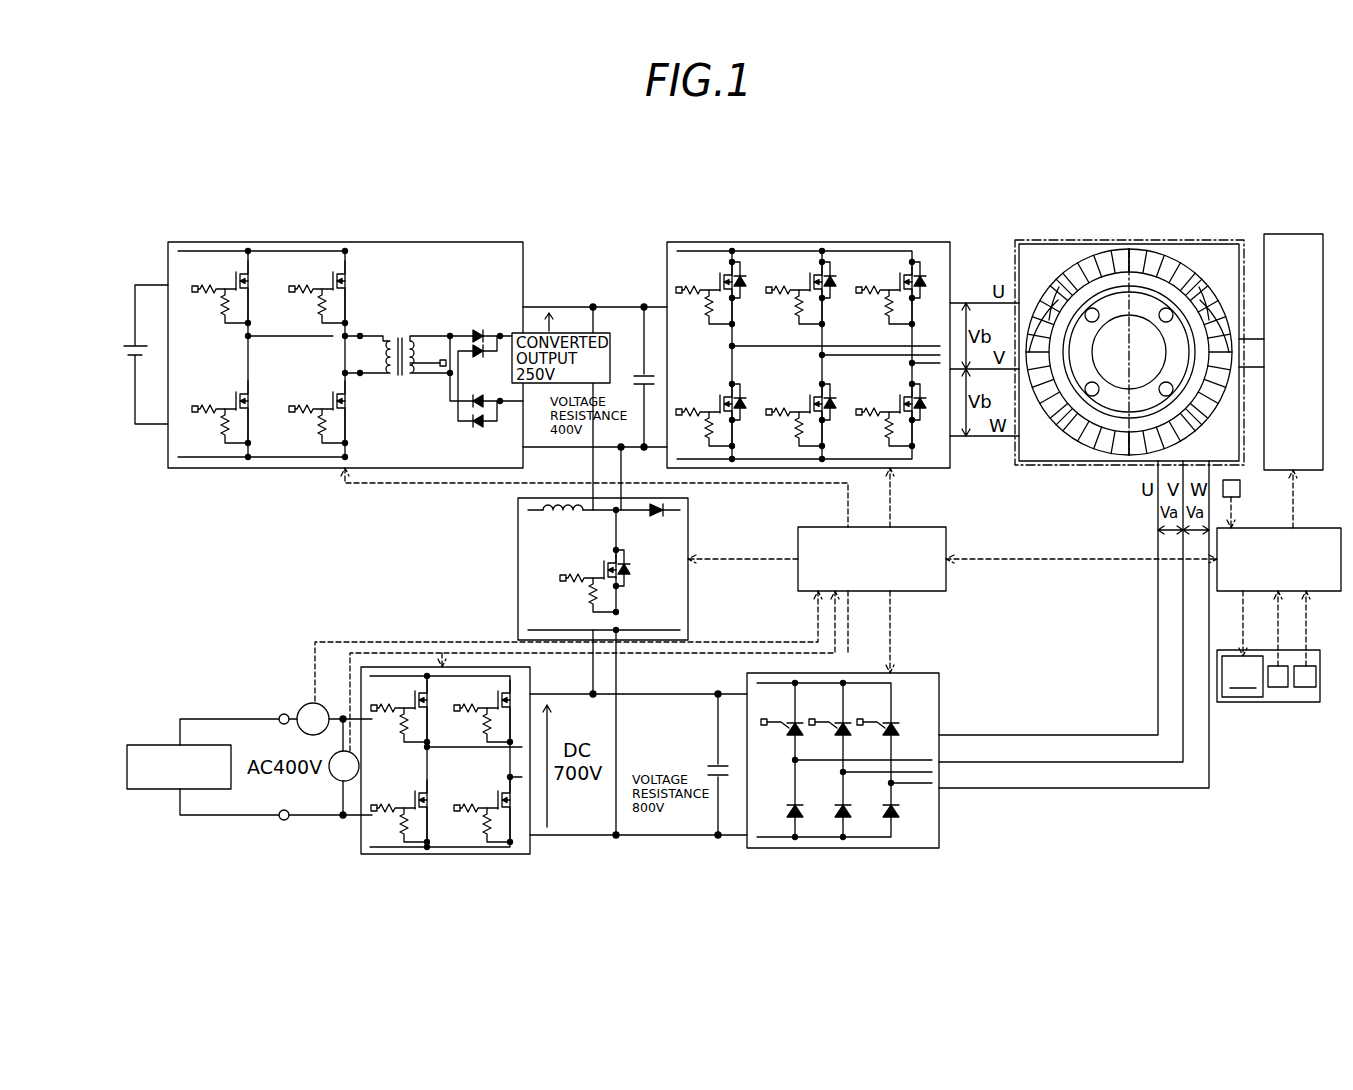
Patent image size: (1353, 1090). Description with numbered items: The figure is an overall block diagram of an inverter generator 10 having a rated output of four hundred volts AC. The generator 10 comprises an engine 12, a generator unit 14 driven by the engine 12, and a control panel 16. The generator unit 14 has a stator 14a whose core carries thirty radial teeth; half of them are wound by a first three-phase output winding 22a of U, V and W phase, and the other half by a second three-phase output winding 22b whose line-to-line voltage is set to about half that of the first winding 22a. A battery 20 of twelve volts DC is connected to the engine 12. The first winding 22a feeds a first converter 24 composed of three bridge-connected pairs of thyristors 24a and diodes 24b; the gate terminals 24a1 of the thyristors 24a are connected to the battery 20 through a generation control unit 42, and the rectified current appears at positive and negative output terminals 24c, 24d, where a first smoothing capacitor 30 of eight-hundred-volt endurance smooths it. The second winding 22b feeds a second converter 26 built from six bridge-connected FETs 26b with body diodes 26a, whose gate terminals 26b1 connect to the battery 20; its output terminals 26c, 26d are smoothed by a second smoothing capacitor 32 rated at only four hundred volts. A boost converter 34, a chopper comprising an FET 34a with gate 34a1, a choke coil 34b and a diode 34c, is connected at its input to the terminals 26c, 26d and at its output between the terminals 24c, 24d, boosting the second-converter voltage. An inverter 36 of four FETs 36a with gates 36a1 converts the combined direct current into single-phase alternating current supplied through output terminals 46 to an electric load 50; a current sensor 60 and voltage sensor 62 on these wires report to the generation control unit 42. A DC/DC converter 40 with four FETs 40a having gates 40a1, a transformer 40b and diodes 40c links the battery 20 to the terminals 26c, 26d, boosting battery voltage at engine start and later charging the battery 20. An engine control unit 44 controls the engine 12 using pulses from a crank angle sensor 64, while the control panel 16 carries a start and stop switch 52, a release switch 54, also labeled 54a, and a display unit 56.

The inverter generator 10 is at (1130, 302).
The engine 12 is at (1293, 234).
The generator unit 14 is at (1129, 300).
The stator 14a is at (1129, 297).
The control panel 16 is at (1285, 673).
The battery 20 is at (130, 345).
The first three-phase output winding 22a is at (1214, 319).
The second three-phase output winding 22b is at (1044, 319).
The first converter 24 is at (881, 735).
The thyristor 24a is at (936, 707).
The gate terminal 24a1 is at (890, 735).
The diode 24b is at (896, 805).
The positive output terminal 24c is at (745, 694).
The negative output terminal 24d is at (746, 848).
The second converter 26 is at (811, 330).
The body diode 26a is at (893, 279).
The field effect transistor 26b is at (879, 299).
The gate terminal 26b1 is at (940, 240).
The positive output terminal 26c is at (650, 306).
The negative output terminal 26d is at (658, 448).
The first smoothing capacitor 30 is at (714, 762).
The second smoothing capacitor 32 is at (638, 370).
The boost converter 34 is at (625, 567).
The field effect transistor 34a is at (577, 576).
The gate 34a1 is at (548, 582).
The choke coil 34b is at (556, 513).
The diode 34c is at (655, 518).
The inverter 36 is at (445, 728).
The field effect transistor 36a is at (472, 713).
The gate 36a1 is at (472, 715).
The DC/DC converter 40 is at (345, 334).
The field effect transistor 40a is at (305, 292).
The gate 40a1 is at (336, 275).
The transformer 40b is at (405, 338).
The diode 40c is at (485, 327).
The generation control unit 42 is at (936, 527).
The engine control unit 44 is at (1325, 528).
The output terminal 46 is at (286, 712).
The electric load 50 is at (155, 745).
The start and stop switch 52 is at (1275, 690).
The release switch 54 is at (1310, 710).
The sensor 54a is at (1306, 690).
The display unit 56 is at (1242, 676).
The current sensor 60 is at (318, 703).
The voltage sensor 62 is at (336, 780).
The crank angle sensor 64 is at (1240, 488).